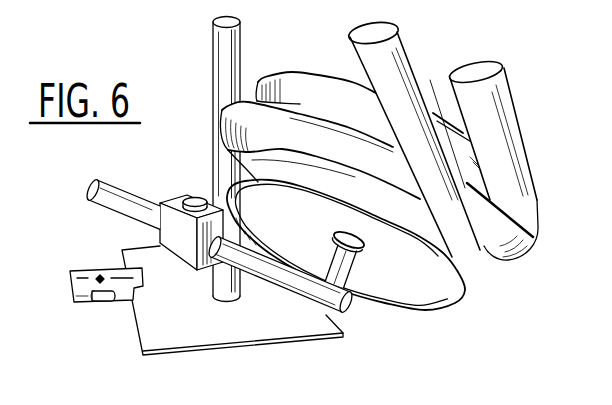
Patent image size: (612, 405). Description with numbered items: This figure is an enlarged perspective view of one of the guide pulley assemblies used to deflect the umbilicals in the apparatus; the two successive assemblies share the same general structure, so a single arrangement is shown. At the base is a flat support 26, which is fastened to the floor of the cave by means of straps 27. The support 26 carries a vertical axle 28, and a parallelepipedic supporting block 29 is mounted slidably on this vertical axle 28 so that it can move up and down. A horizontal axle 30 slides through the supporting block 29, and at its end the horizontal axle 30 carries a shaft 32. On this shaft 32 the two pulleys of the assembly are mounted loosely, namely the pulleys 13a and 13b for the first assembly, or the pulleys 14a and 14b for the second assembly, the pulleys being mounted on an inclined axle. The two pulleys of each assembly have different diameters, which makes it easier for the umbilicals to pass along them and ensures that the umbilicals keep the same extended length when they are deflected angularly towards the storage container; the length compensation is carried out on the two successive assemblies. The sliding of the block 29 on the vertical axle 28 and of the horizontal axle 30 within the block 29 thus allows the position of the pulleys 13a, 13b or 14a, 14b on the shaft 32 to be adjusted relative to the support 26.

The pulley 13a is at (293, 73).
The pulley 14a is at (380, 26).
The pulley 13b is at (431, 240).
The pulley 14b is at (486, 201).
The flat support 26 is at (193, 335).
The straps 27 is at (88, 307).
The vertical axle 28 is at (213, 49).
The parallelepipedic supporting block 29 is at (177, 197).
The horizontal axle 30 is at (282, 277).
The shaft 32 is at (349, 260).